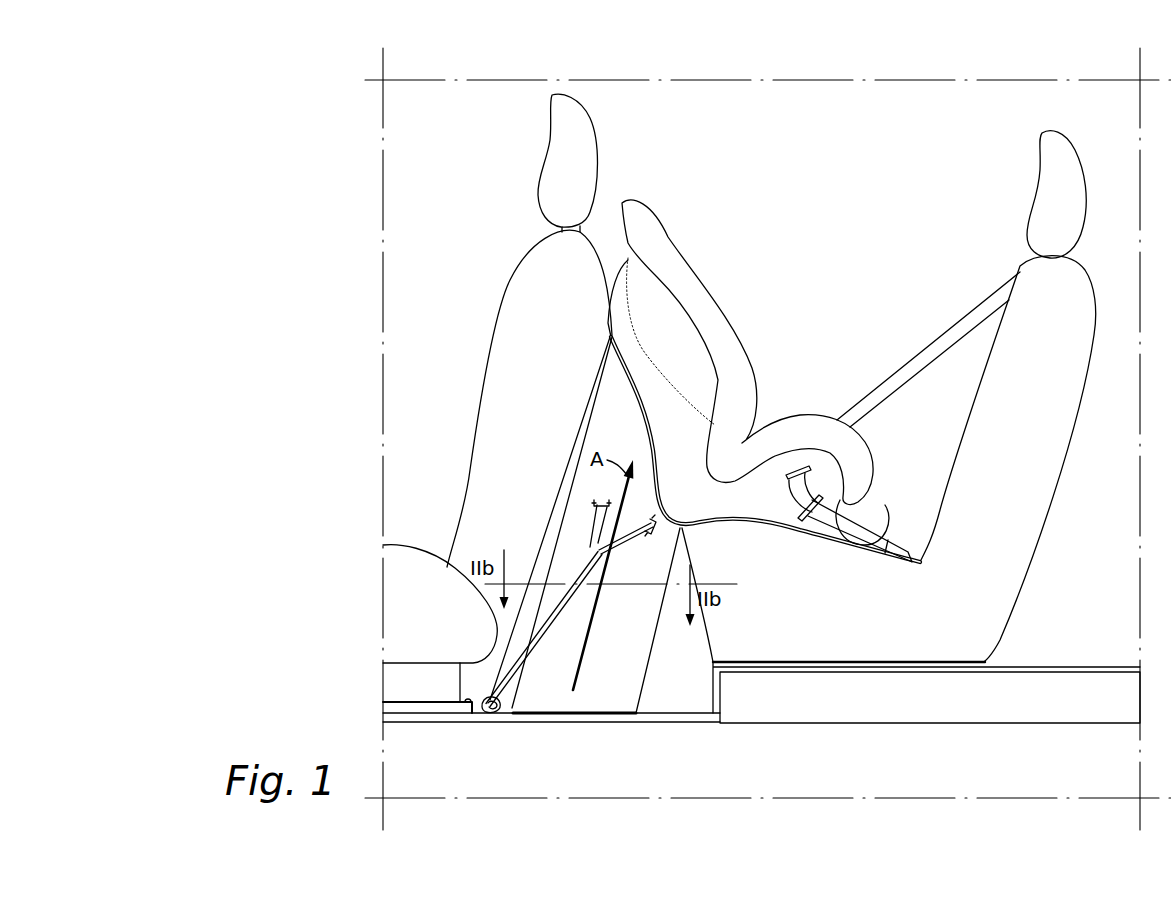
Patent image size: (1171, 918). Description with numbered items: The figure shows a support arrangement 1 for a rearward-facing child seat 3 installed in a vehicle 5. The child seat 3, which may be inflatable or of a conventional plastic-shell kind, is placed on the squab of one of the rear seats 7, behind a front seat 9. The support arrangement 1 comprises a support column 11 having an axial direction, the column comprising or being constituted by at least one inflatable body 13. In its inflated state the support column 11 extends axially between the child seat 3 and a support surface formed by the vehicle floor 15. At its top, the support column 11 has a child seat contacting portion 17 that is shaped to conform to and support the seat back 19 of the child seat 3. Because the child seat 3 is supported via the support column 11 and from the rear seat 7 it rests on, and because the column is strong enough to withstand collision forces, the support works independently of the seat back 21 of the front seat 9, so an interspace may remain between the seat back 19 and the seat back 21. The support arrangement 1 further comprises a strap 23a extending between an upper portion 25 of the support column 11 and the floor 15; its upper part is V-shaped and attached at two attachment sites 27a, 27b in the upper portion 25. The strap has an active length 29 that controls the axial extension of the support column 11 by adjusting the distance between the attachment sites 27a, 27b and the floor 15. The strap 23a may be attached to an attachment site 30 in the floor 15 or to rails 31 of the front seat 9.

The support arrangement 1 is at (903, 177).
The child seat 3 is at (772, 275).
The vehicle 5 is at (412, 242).
The rear seat 7 is at (812, 621).
The front seat 9 is at (406, 562).
The support column 11 is at (668, 657).
The inflatable body 13 is at (605, 617).
The vehicle floor 15 is at (638, 716).
The child seat contacting portion 17 is at (632, 382).
The seat back of the child seat 19 is at (633, 347).
The seat back of the front seat 21 is at (537, 314).
The strap 23a is at (508, 677).
The upper portion of the support column 25 is at (605, 429).
The first attachment site 27a is at (597, 503).
The second attachment site 27b is at (682, 528).
The active length of the strap 29 is at (550, 640).
The floor attachment site 30 is at (478, 713).
The rails of the front seat 31 is at (438, 710).